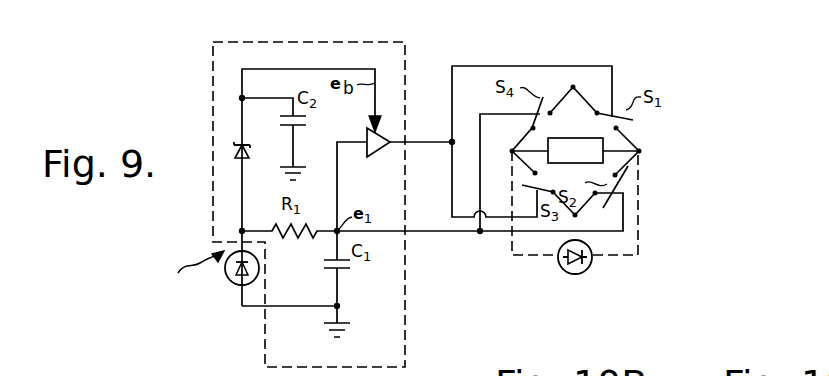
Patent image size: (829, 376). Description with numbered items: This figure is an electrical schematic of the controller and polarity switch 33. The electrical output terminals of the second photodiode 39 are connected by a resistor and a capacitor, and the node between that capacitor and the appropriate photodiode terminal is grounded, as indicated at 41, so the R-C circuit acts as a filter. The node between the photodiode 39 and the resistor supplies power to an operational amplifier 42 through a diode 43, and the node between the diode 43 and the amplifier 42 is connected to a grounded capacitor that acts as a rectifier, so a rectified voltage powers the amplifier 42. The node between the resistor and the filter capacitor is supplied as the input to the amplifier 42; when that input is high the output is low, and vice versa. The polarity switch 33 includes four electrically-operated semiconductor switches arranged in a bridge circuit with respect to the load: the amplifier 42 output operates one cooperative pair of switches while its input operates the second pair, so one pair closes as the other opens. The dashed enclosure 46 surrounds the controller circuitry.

The polarity switch 33 is at (636, 65).
The second photodiode 39 is at (232, 285).
The ground 41 is at (346, 330).
The operational amplifier 42 is at (383, 153).
The diode 43 is at (254, 150).
The control circuit 46 is at (213, 66).